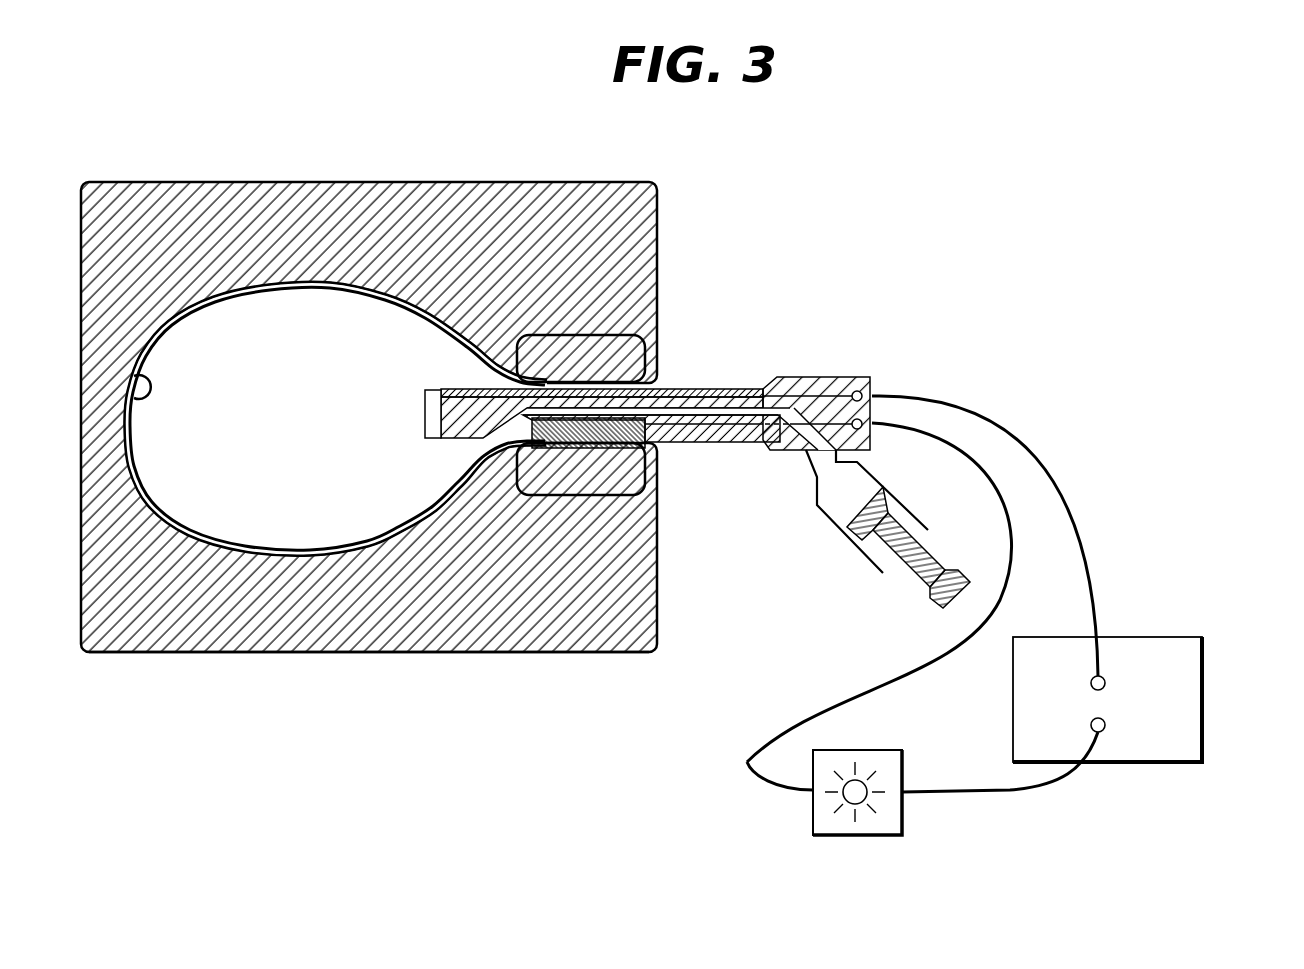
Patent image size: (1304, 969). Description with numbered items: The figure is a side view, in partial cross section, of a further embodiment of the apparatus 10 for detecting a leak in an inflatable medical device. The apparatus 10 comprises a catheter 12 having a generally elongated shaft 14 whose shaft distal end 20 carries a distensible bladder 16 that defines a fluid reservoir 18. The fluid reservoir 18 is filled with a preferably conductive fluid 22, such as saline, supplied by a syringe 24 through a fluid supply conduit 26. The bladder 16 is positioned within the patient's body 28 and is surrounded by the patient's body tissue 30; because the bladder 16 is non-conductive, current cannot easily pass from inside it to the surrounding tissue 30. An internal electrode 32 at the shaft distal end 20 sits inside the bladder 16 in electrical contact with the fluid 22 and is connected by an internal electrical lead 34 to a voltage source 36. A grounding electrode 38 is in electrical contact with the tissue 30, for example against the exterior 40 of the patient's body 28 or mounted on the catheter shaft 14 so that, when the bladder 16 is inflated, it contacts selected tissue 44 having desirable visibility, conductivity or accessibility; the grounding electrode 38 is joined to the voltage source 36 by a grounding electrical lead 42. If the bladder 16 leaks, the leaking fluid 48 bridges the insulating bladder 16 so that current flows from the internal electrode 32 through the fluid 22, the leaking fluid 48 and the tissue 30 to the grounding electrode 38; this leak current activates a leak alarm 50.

The apparatus 10 is at (796, 212).
The catheter 12 is at (752, 390).
The shaft 14 is at (708, 390).
The distensible bladder 16 is at (134, 398).
The fluid reservoir 18 is at (297, 352).
The shaft distal end 20 is at (424, 390).
The fluid 22 is at (240, 315).
The syringe 24 is at (842, 528).
The fluid supply conduit 26 is at (753, 428).
The patient's body 28 is at (527, 182).
The patient's body tissue 30 is at (456, 220).
The internal electrode 32 is at (432, 438).
The internal electrical lead 34 is at (790, 392).
The voltage source 36 is at (1203, 698).
The grounding electrode 38 is at (657, 447).
The exterior of the patient's body 40 is at (243, 653).
The grounding electrical lead 42 is at (738, 430).
The selected tissue 44 is at (620, 483).
The leaking fluid 48 is at (810, 810).
The leak alarm 50 is at (862, 792).